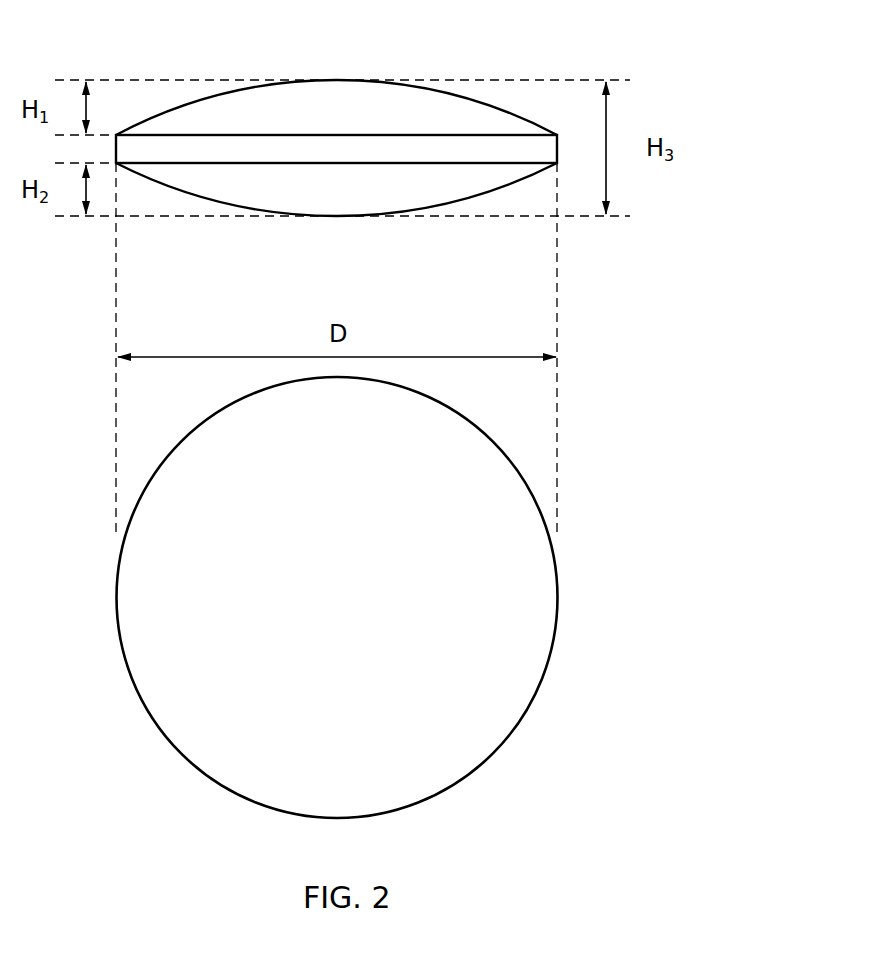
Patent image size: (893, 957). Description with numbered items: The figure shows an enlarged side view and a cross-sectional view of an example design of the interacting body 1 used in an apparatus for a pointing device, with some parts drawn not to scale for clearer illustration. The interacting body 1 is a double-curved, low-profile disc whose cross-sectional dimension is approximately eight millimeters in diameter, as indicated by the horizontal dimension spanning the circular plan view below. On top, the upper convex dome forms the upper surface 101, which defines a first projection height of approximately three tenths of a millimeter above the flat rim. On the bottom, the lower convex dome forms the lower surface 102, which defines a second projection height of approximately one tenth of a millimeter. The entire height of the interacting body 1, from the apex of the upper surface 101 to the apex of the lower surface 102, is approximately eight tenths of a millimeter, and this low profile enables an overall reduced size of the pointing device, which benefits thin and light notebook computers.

The interacting body 1 is at (340, 415).
The upper surface 101 is at (447, 87).
The lower surface 102 is at (441, 207).